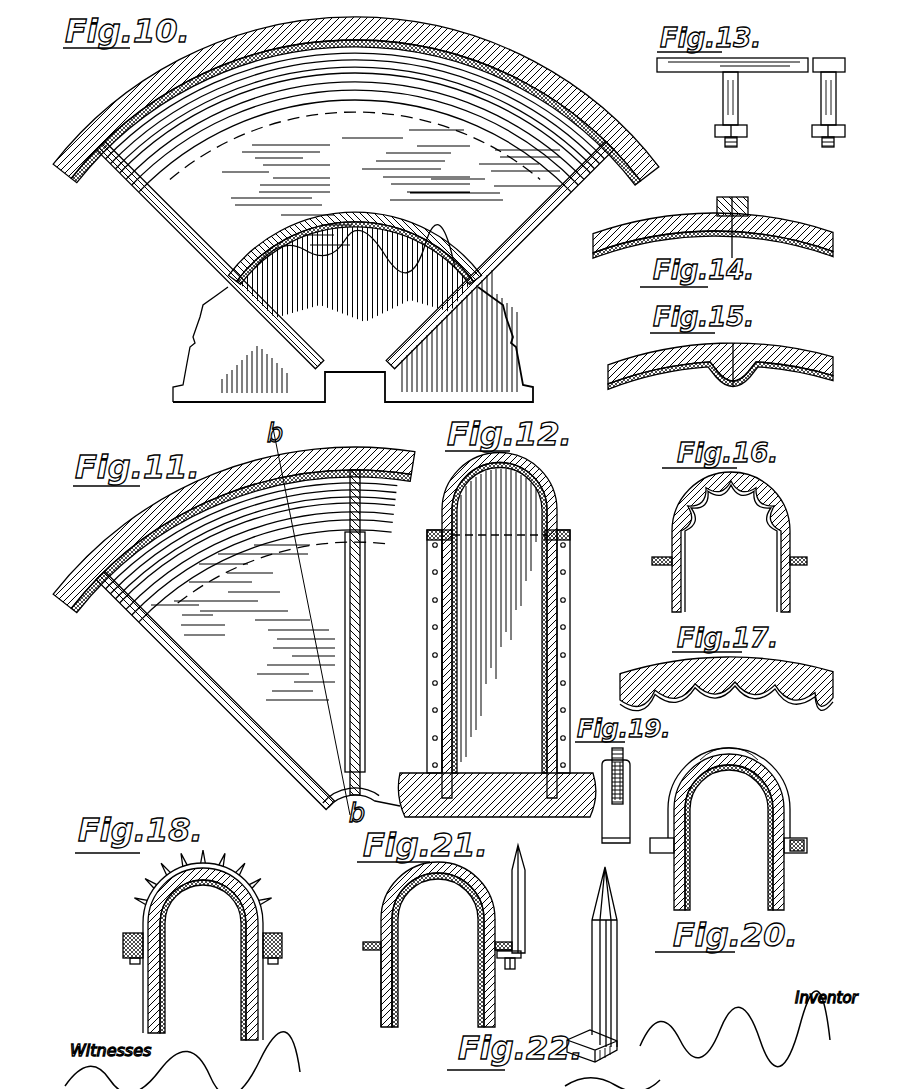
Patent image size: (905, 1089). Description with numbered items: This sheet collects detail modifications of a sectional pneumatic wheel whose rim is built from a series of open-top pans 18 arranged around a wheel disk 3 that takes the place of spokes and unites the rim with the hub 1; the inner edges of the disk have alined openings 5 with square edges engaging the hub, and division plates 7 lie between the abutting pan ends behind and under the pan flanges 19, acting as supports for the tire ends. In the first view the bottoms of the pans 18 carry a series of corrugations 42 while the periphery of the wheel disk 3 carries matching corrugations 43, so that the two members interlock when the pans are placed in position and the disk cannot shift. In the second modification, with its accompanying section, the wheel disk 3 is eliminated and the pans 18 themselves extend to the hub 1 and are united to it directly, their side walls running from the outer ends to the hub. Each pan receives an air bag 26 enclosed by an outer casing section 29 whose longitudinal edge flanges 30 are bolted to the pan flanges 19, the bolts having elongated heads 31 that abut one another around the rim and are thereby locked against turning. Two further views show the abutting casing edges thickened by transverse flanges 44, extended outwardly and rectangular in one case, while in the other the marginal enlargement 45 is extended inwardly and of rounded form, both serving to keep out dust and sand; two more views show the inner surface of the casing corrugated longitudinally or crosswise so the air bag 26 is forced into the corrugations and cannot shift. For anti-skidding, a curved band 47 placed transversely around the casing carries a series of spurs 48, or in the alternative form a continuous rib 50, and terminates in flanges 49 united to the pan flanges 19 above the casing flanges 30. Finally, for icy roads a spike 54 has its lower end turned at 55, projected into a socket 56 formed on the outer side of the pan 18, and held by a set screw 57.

In FIG. 12, the hub 1 is at (497, 796).
In FIG. 10, the wheel disk 3 is at (355, 275).
In FIG. 10, the alined openings 5 is at (358, 372).
In FIG. 10, the division plates 7 is at (180, 232).
In FIG. 11, the division plates 7 is at (365, 550).
In FIG. 10, the pans 18 is at (404, 286).
In FIG. 12, the pans 18 is at (442, 660).
In FIG. 18, the pans 18 is at (263, 1006).
In FIG. 21, the pans 18 is at (392, 1000).
In FIG. 12, the flanges 19 is at (572, 582).
In FIG. 18, the flanges 19 is at (282, 950).
In FIG. 21, the flanges 19 is at (375, 950).
In FIG. 10, the air bags 26 is at (497, 62).
In FIG. 11, the air bags 26 is at (343, 563).
In FIG. 12, the air bags 26 is at (547, 604).
In FIG. 14, the air bags 26 is at (795, 247).
In FIG. 15, the air bags 26 is at (775, 376).
In FIG. 16, the air bags 26 is at (773, 512).
In FIG. 17, the air bags 26 is at (760, 692).
In FIG. 18, the air bags 26 is at (241, 895).
In FIG. 20, the air bags 26 is at (764, 792).
In FIG. 21, the air bags 26 is at (456, 890).
In FIG. 10, the outer casing section 29 is at (397, 28).
In FIG. 11, the outer casing section 29 is at (338, 456).
In FIG. 12, the outer casing section 29 is at (557, 490).
In FIG. 14, the outer casing section 29 is at (790, 208).
In FIG. 15, the outer casing section 29 is at (793, 350).
In FIG. 16, the outer casing section 29 is at (783, 502).
In FIG. 17, the outer casing section 29 is at (805, 668).
In FIG. 18, the outer casing section 29 is at (212, 880).
In FIG. 20, the outer casing section 29 is at (737, 775).
In FIG. 21, the outer casing section 29 is at (400, 880).
In FIG. 12, the longitudinal edge flanges 30 is at (573, 532).
In FIG. 16, the longitudinal edge flanges 30 is at (663, 557).
In FIG. 20, the longitudinal edge flanges 30 is at (803, 840).
In FIG. 21, the longitudinal edge flanges 30 is at (368, 944).
In FIG. 13, the elongated bolt heads 31 is at (821, 92).
In FIG. 10, the corrugations 42 is at (355, 248).
In FIG. 10, the corrugations 43 is at (205, 312).
In FIG. 14, the transverse flanges 44 is at (742, 198).
In FIG. 15, the groove 45 is at (741, 386).
In FIG. 18, the curved band 47 is at (143, 905).
In FIG. 19, the curved band 47 is at (605, 823).
In FIG. 20, the curved band 47 is at (779, 778).
In FIG. 18, the spurs 48 is at (249, 873).
In FIG. 18, the flanges 49 is at (123, 940).
In FIG. 19, the flanges 49 is at (608, 843).
In FIG. 20, the flanges 49 is at (808, 855).
In FIG. 19, the continuous rib 50 is at (625, 752).
In FIG. 20, the continuous rib 50 is at (752, 760).
In FIG. 21, the spike 54 is at (525, 905).
In FIG. 22, the spike 54 is at (618, 947).
In FIG. 21, the turned lower end 55 is at (500, 950).
In FIG. 22, the turned lower end 55 is at (585, 1034).
In FIG. 21, the socket 56 is at (521, 956).
In FIG. 21, the set screw 57 is at (513, 969).